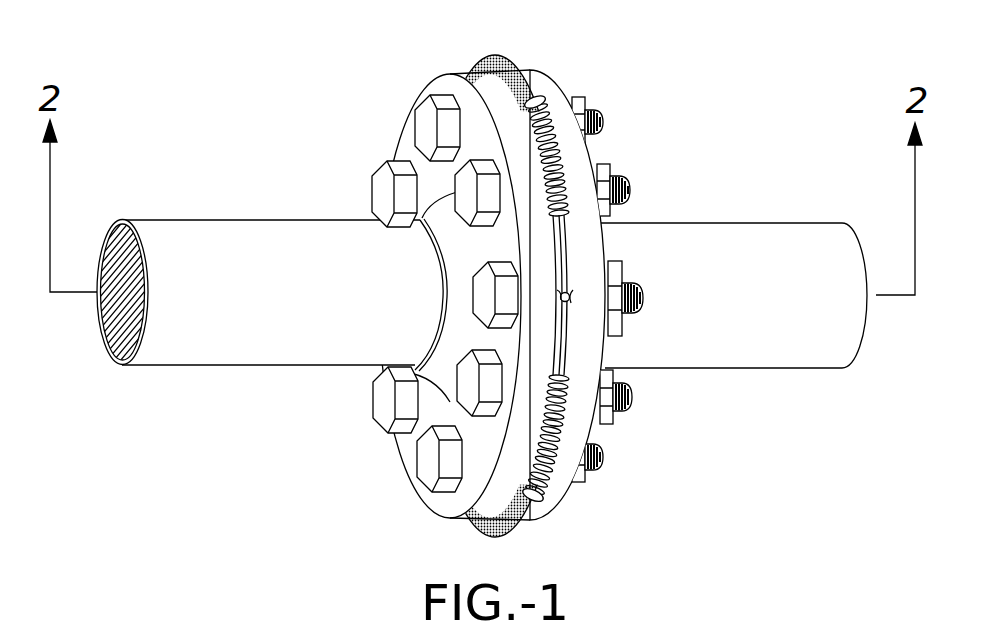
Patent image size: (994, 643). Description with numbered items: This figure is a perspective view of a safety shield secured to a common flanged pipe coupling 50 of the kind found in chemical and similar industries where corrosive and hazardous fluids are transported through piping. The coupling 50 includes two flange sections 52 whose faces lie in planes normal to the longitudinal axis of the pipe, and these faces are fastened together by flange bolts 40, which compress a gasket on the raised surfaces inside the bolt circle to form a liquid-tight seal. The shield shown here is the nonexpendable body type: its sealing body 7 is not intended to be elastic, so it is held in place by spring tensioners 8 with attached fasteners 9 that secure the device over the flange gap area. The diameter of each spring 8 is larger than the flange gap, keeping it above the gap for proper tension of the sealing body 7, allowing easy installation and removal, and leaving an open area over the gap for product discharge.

The sealing body 7 is at (512, 66).
The spring tensioners 8 is at (547, 165).
The fasteners 9 is at (572, 298).
The flange bolts 40 is at (422, 128).
The flanged pipe coupling 50 is at (481, 302).
The flange sections 52 is at (540, 328).